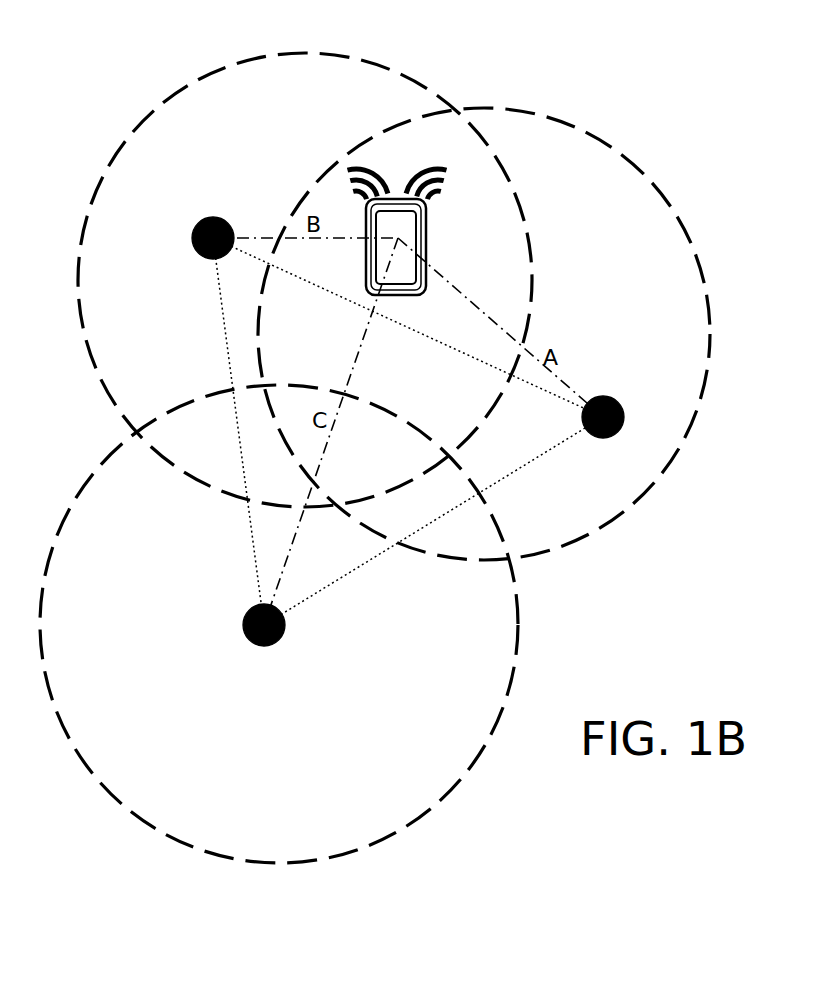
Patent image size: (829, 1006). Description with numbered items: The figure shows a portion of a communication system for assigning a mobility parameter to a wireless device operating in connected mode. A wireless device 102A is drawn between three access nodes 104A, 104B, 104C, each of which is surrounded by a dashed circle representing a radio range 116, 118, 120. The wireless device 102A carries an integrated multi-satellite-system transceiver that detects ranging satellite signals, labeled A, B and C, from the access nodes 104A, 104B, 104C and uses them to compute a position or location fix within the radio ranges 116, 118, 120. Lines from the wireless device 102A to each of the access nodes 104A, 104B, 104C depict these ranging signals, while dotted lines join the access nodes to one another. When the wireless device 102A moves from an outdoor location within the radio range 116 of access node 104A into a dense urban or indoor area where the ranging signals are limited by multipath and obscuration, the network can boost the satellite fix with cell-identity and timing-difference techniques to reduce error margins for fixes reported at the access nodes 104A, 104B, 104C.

The wireless device 102A is at (422, 263).
The access node 104A is at (624, 414).
The access node 104B is at (192, 238).
The access node 104C is at (243, 625).
The radio range 116 is at (711, 322).
The radio range 118 is at (147, 826).
The radio range 120 is at (320, 54).